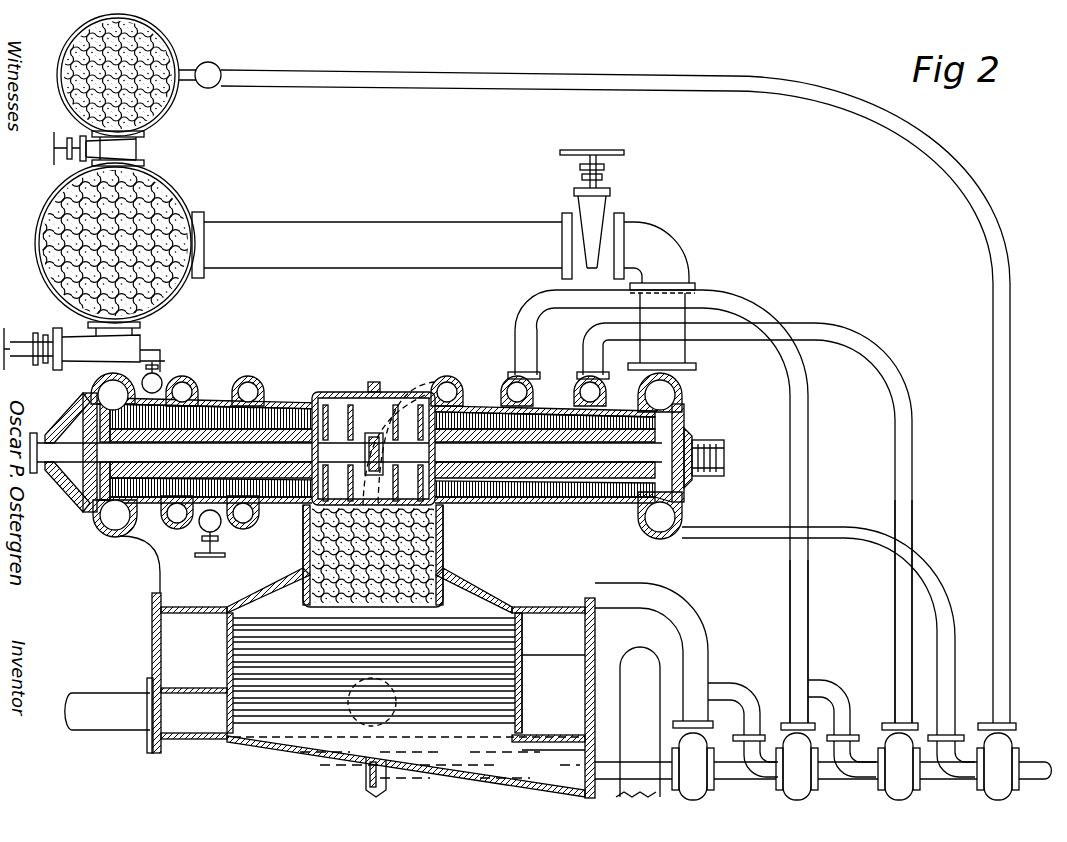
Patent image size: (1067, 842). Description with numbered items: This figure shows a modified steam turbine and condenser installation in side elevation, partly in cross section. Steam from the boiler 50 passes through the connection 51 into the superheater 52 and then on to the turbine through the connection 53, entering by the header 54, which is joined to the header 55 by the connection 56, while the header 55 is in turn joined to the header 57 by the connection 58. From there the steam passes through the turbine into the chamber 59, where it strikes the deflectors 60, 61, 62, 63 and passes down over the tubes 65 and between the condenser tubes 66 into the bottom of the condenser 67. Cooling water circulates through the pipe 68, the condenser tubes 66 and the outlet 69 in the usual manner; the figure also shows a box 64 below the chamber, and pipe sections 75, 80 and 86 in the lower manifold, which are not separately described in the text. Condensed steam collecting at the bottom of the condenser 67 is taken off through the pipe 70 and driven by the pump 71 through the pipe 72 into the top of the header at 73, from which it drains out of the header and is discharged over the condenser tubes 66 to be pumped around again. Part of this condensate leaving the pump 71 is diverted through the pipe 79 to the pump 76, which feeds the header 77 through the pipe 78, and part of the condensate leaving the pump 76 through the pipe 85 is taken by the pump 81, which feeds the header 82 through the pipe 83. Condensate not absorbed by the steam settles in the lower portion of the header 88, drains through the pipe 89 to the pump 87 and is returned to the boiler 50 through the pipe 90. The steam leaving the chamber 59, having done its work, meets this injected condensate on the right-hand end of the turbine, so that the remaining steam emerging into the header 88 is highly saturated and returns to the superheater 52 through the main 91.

The boiler 50 is at (165, 58).
The connection 51 is at (142, 150).
The superheater 52 is at (176, 197).
The connection 53 is at (82, 360).
The header 54 is at (98, 533).
The header 55 is at (196, 384).
The connection 56 is at (160, 374).
The header 57 is at (254, 522).
The connection 58 is at (224, 530).
The chamber 59 is at (340, 400).
The deflector 60 is at (322, 398).
The deflector 61 is at (372, 420).
The deflector 62 is at (410, 483).
The deflector 63 is at (408, 419).
The tube box 64 is at (445, 560).
The tubes 65 is at (312, 550).
The condenser tubes 66 is at (230, 658).
The bottom of the condenser 67 is at (522, 745).
The pipe 68 is at (638, 722).
The outlet 69 is at (104, 712).
The pipe 70 is at (606, 762).
The pump 71 is at (700, 762).
The pipe 72 is at (708, 642).
The top of the header 73 is at (450, 380).
The pipe 75 is at (730, 779).
The pump 76 is at (803, 752).
The header 77 is at (508, 372).
The pipe 78 is at (806, 655).
The pipe 79 is at (746, 708).
The pipe 80 is at (826, 779).
The pump 81 is at (903, 752).
The header 82 is at (585, 382).
The pipe 83 is at (912, 520).
The pipe 85 is at (832, 690).
The pipe 86 is at (930, 779).
The pump 87 is at (1008, 748).
The header 88 is at (690, 530).
The pipe 89 is at (955, 634).
The pipe 90 is at (1010, 473).
The main 91 is at (444, 260).